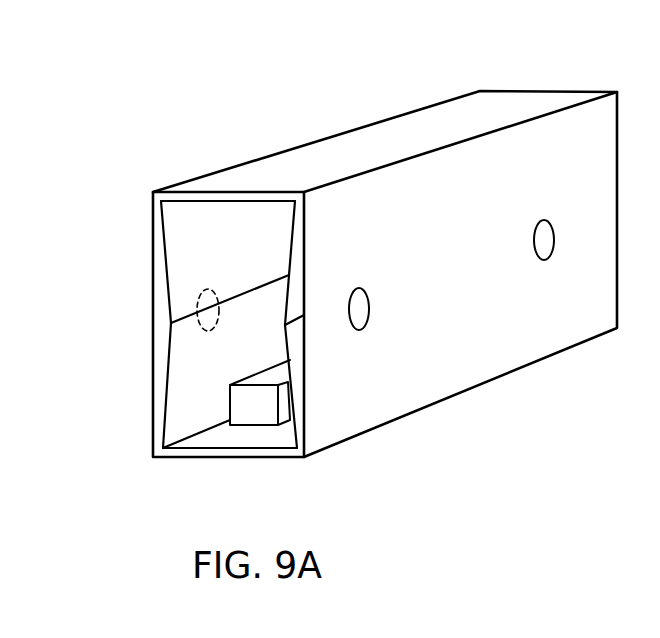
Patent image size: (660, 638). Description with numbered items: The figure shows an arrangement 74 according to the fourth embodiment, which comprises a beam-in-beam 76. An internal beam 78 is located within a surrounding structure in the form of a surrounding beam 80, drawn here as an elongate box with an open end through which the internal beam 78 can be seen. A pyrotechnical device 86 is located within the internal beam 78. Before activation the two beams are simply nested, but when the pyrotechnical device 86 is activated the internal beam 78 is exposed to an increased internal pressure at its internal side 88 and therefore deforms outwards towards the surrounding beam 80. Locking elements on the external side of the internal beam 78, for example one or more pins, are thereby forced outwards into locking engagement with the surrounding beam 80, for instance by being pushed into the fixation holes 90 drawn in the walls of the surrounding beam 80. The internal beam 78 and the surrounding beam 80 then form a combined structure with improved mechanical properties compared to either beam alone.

The arrangement 74 is at (385, 253).
The beam-in-beam 76 is at (248, 137).
The internal beam 78 is at (169, 352).
The surrounding beam 80 is at (153, 264).
The pyrotechnical device 86 is at (268, 418).
The internal side 88 is at (175, 382).
The fixation holes 90 is at (207, 292).